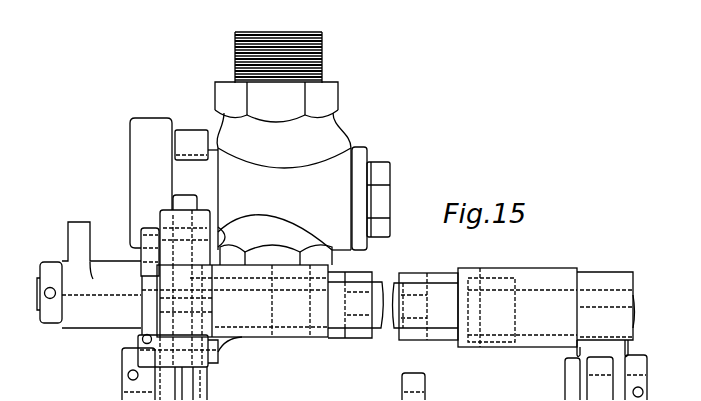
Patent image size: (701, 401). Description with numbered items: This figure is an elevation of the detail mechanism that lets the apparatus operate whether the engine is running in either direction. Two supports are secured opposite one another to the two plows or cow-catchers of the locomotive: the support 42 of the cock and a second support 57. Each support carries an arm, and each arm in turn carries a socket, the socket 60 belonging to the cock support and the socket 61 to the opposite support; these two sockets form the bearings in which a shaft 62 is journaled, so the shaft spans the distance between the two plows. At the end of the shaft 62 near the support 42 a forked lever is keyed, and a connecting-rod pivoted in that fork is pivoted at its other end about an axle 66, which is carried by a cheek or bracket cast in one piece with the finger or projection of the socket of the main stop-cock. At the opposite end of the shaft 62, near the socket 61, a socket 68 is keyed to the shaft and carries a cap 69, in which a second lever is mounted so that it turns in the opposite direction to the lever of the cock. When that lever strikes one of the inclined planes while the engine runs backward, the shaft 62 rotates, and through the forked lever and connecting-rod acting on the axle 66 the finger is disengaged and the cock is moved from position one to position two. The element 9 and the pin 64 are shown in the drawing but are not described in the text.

The threaded pipe nipple 9 is at (322, 80).
The support of the cock 42 is at (358, 278).
The support 57 is at (422, 337).
The socket 60 is at (283, 329).
The socket 61 is at (517, 307).
The shaft 62 is at (428, 306).
The pivot pin 64 is at (142, 339).
The axle 66 is at (140, 252).
The socket 68 is at (593, 280).
The cap 69 is at (582, 392).